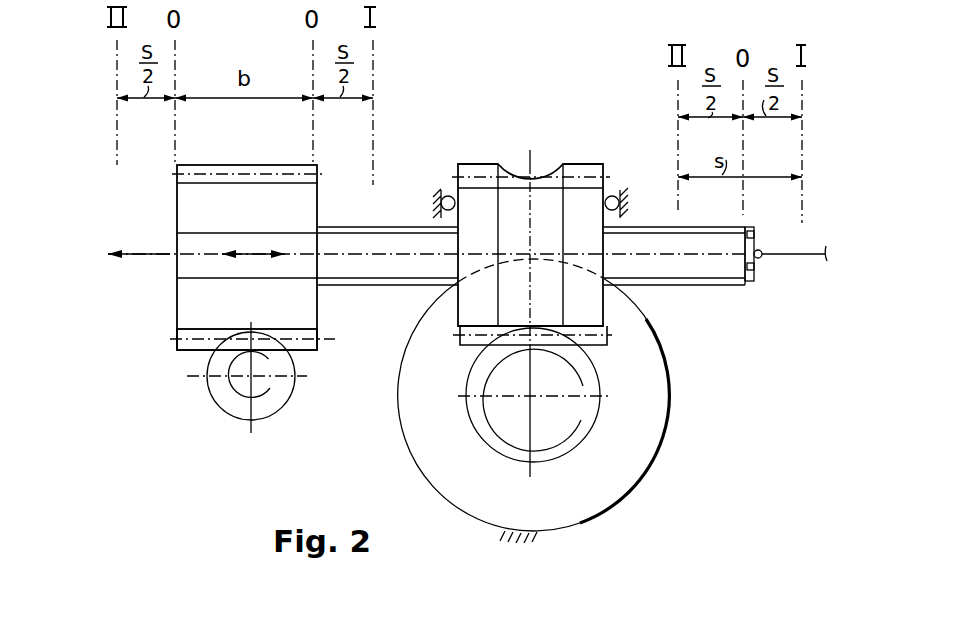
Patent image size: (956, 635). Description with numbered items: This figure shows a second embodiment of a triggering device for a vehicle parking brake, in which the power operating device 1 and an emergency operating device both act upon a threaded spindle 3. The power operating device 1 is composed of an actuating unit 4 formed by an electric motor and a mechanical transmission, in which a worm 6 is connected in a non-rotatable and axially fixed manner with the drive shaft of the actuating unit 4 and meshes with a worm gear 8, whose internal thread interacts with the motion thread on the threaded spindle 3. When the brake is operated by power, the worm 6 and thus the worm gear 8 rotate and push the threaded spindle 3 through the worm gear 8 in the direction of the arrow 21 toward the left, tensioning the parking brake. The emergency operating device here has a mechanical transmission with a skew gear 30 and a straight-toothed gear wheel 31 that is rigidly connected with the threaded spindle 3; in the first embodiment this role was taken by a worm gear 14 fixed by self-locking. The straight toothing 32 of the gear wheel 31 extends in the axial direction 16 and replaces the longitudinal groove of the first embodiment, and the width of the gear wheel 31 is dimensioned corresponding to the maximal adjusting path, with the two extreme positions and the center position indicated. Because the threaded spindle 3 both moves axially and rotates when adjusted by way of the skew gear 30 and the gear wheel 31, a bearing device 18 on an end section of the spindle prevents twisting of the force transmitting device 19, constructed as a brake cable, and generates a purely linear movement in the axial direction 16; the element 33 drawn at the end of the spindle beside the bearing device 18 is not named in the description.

The power operating device 1 is at (580, 117).
The threaded spindle 3 is at (392, 243).
The actuating unit 4 is at (618, 492).
The worm 6 is at (588, 418).
The worm gear 8 is at (594, 307).
The worm gear 14 is at (186, 396).
The axial direction 16 is at (252, 252).
The bearing device 18 is at (759, 285).
The force transmitting device 19 is at (802, 265).
The arrow 21 is at (143, 252).
The skew gear 30 is at (275, 403).
The straight-toothed gear wheel 31 is at (194, 309).
The straight toothing 32 is at (190, 348).
The rod 33 is at (817, 246).